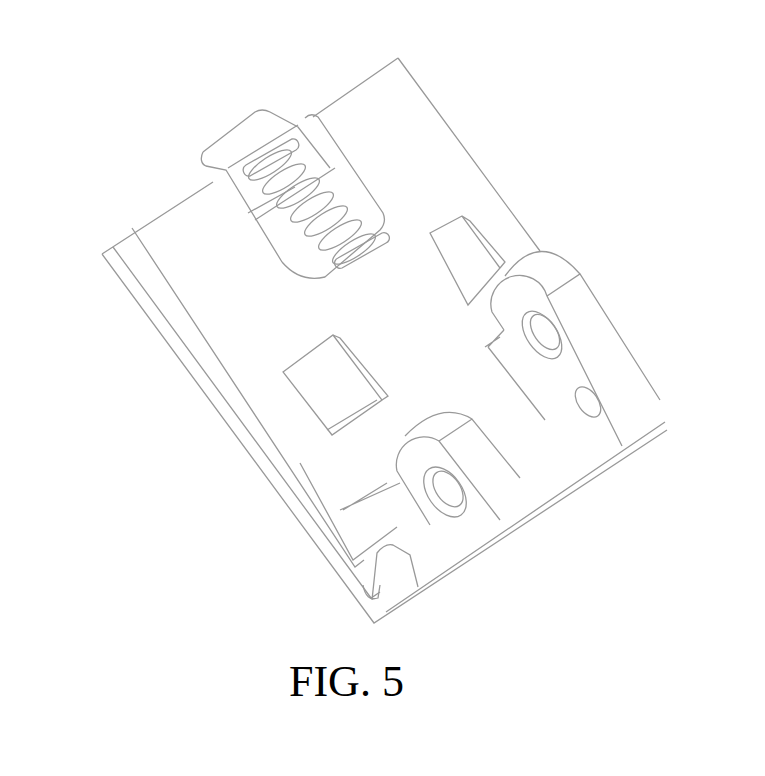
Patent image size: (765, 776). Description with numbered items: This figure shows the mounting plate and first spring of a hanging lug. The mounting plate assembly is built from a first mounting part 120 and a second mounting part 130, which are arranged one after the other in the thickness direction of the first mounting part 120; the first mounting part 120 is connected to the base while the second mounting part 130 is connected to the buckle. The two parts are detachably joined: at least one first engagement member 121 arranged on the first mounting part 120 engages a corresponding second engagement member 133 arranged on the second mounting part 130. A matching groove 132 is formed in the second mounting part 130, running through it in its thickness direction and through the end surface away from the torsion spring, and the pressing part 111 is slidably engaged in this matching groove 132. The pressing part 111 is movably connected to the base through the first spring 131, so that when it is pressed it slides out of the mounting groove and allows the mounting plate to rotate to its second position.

The pressing part 111 is at (247, 138).
The first mounting part 120 is at (165, 330).
The first engagement member 121 is at (462, 260).
The second mounting part 130 is at (283, 452).
The first spring 131 is at (327, 195).
The matching groove 132 is at (328, 153).
The second engagement member 133 is at (500, 262).